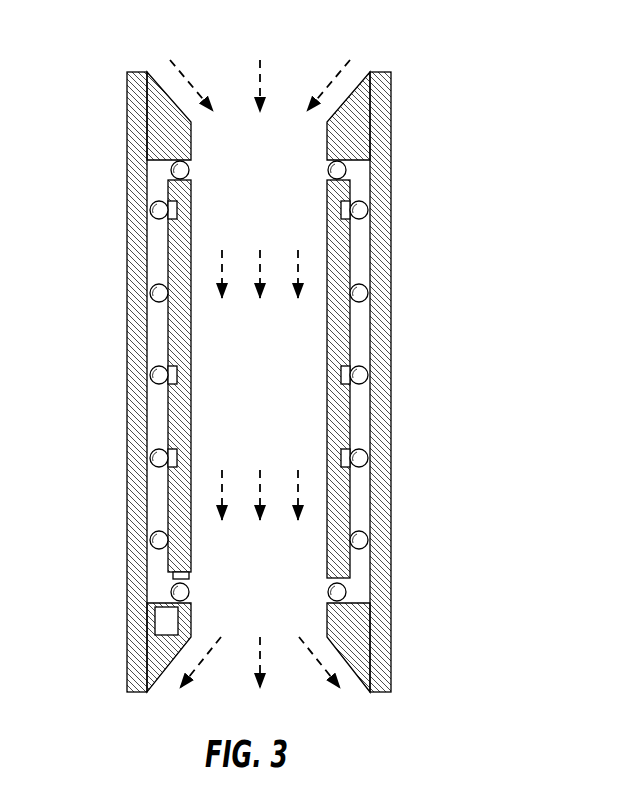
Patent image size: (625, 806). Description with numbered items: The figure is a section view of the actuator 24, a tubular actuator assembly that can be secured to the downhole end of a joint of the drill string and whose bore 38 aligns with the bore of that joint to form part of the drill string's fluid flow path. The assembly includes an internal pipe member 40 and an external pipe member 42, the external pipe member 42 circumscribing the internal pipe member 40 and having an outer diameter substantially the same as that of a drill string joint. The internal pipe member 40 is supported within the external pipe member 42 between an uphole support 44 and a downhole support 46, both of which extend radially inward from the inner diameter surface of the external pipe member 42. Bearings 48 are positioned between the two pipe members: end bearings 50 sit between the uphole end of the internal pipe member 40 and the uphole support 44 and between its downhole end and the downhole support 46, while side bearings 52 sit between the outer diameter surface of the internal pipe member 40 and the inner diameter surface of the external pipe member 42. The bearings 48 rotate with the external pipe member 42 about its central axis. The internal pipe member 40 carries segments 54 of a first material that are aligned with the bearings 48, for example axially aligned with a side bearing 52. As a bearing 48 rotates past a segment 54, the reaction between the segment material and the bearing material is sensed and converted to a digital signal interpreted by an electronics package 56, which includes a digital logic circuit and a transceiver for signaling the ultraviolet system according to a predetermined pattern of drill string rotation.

The actuator 24 is at (454, 71).
The bore 38 is at (297, 426).
The internal pipe member 40 is at (334, 240).
The external pipe member 42 is at (388, 476).
The uphole support 44 is at (358, 130).
The downhole support 46 is at (358, 632).
The bearings 48 is at (364, 292).
The end bearings 50 is at (176, 175).
The side bearings 52 is at (158, 464).
The segments 54 is at (173, 375).
The electronics package 56 is at (160, 622).